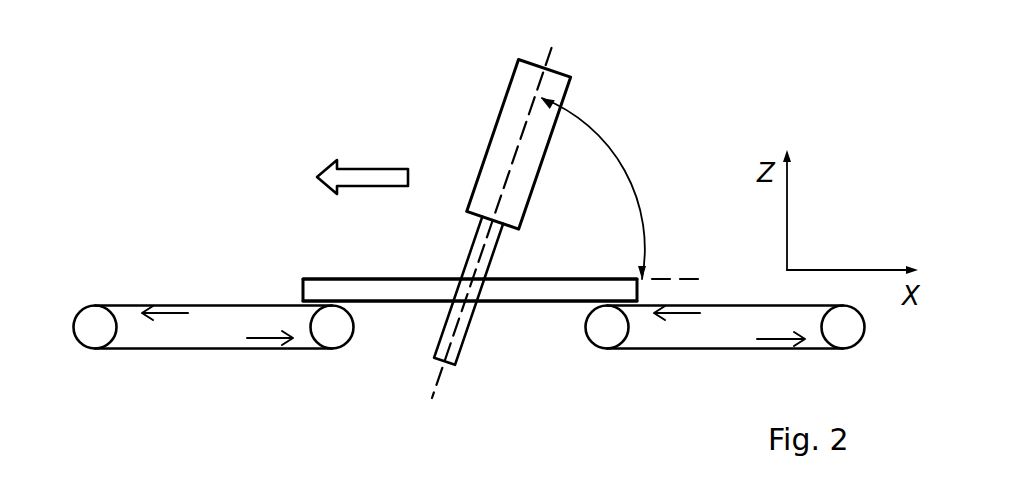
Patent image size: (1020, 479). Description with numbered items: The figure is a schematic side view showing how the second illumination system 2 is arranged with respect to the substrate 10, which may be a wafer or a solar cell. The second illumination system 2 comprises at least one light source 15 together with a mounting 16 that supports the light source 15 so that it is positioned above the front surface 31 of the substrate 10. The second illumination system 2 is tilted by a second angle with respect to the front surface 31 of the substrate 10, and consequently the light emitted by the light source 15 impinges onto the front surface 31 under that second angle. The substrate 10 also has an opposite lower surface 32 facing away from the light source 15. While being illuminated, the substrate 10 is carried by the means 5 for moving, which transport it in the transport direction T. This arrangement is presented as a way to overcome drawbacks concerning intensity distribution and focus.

The second illumination system 2 is at (480, 134).
The light source 15 is at (560, 89).
The mounting 16 is at (453, 315).
The substrate 10 is at (318, 290).
The front surface 31 is at (395, 271).
The lower side of plate 32 is at (570, 310).
The means for moving 5 is at (188, 334).
The transport direction T is at (365, 172).